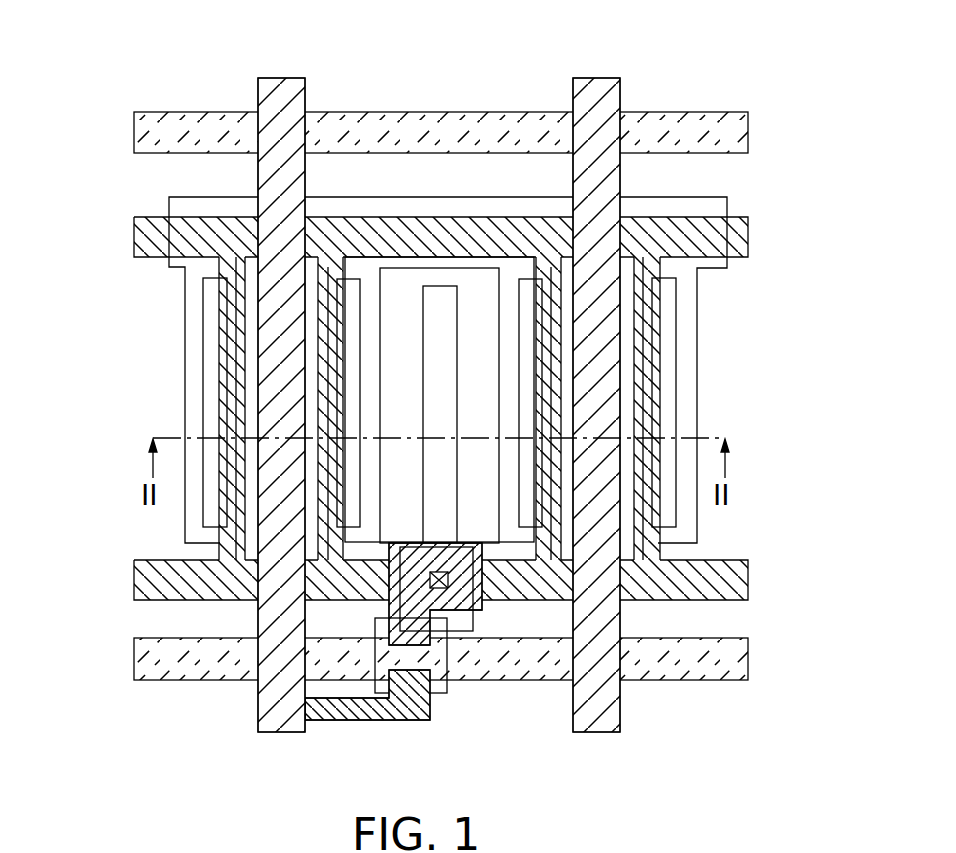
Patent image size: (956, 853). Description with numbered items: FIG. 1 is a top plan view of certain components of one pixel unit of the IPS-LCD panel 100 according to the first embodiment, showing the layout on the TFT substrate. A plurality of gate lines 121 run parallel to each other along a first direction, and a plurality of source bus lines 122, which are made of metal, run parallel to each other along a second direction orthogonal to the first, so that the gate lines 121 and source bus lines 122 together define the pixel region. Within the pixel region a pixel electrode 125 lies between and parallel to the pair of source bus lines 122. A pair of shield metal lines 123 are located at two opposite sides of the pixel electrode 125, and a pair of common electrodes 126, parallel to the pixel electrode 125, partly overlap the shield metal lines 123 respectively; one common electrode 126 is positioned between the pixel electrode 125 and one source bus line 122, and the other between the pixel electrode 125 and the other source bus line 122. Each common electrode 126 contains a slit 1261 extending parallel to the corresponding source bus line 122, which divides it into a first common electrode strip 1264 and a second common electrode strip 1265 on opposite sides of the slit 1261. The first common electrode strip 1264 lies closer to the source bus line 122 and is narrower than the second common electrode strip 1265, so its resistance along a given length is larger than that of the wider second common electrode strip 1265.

The IPS-LCD panel 100 is at (398, 57).
The gate line 121 is at (148, 128).
The source bus line 122 is at (280, 712).
The shield metal line 123 is at (328, 557).
The pixel electrode 125 is at (440, 428).
The common electrode 126 is at (362, 533).
The slit 1261 is at (345, 398).
The first common electrode strip 1264 is at (330, 338).
The second common electrode strip 1265 is at (370, 432).